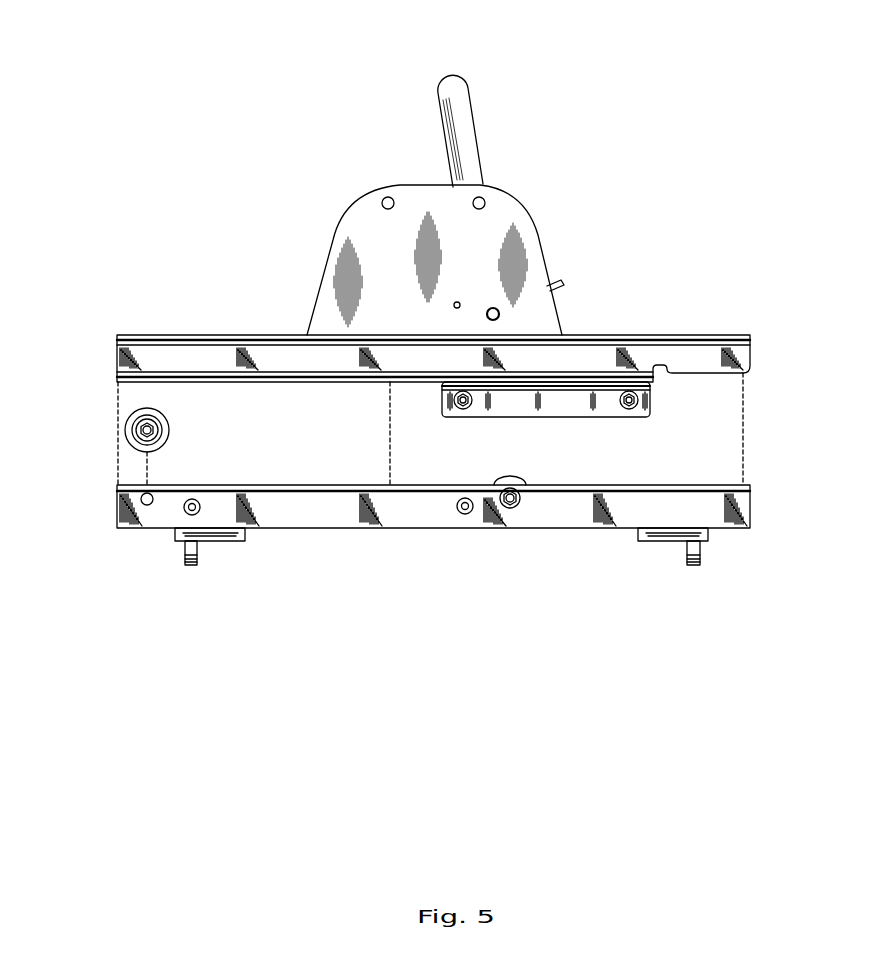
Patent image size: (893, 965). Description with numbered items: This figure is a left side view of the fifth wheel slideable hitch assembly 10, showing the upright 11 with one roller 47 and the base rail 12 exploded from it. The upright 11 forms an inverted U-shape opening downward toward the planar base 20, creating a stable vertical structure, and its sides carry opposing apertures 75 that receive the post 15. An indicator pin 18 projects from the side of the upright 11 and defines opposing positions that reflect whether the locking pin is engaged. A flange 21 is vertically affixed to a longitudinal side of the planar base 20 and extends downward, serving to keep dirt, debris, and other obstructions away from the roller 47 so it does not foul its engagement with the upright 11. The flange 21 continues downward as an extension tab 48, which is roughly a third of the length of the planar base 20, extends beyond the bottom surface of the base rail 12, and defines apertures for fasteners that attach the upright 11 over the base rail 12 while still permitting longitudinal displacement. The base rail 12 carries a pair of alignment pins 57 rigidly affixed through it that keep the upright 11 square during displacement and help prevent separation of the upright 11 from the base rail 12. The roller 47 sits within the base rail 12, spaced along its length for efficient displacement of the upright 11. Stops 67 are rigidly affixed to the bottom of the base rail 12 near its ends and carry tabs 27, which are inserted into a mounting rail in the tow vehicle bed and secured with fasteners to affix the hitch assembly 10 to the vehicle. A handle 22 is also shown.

The fifth wheel slideable hitch assembly 10 is at (49, 40).
The upright 11 is at (340, 237).
The base rail 12 is at (358, 512).
The post 15 is at (499, 315).
The indicator pin 18 is at (565, 281).
The planar base 20 is at (145, 335).
The flange 21 is at (745, 353).
The handle 22 is at (462, 100).
The tab 27 is at (190, 565).
The roller 47 is at (160, 424).
The extension tab 48 is at (512, 412).
The alignment pin 57 is at (197, 502).
The stop 67 is at (222, 541).
The aperture 75 is at (485, 296).